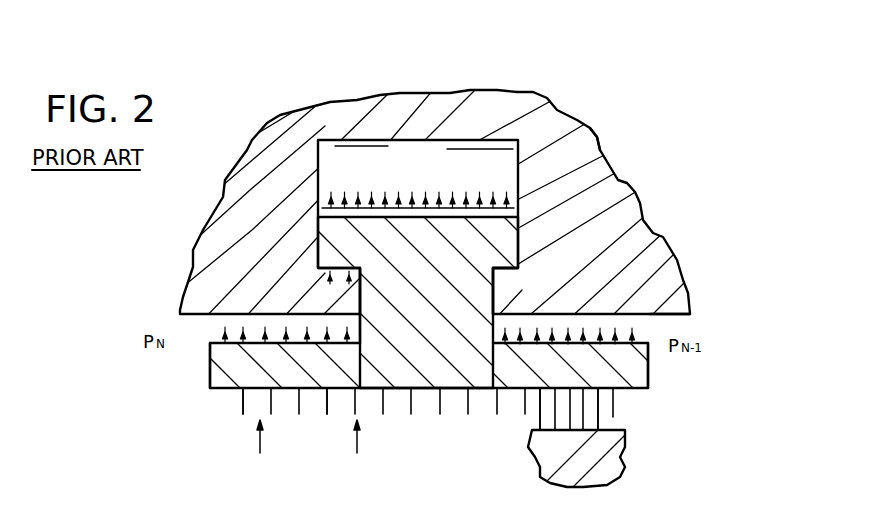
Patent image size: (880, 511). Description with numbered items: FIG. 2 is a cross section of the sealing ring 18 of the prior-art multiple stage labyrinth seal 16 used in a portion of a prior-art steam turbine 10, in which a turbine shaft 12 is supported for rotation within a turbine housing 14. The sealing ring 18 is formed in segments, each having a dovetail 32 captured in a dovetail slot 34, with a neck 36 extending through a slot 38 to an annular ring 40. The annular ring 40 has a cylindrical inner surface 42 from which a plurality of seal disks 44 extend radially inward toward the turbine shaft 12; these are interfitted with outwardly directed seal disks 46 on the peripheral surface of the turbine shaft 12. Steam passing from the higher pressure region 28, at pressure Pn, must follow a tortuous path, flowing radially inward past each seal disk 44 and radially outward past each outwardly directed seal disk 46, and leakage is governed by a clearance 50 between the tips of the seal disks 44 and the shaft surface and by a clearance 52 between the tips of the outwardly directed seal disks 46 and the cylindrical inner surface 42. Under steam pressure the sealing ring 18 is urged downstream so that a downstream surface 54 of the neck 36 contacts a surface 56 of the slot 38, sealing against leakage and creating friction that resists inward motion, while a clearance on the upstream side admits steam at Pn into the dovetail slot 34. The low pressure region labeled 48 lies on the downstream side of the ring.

The portion of a prior-art steam turbine 10 is at (651, 153).
The turbine shaft 12 is at (627, 465).
The turbine housing 14 is at (633, 226).
The multiple stage labyrinth seal 16 is at (672, 397).
The sealing ring 18 is at (435, 395).
The higher pressure region 28 is at (185, 370).
The dovetail 32 is at (594, 140).
The dovetail slot 34 is at (380, 148).
The neck 36 is at (493, 326).
The slot 38 is at (362, 309).
The annular ring 40 is at (648, 371).
The cylindrical inner surface 42 is at (323, 392).
The seal disks 44 is at (243, 402).
The outwardly directed seal disks 46 is at (540, 417).
The low pressure region 48 is at (687, 327).
The clearance 50 is at (641, 424).
The clearance 52 is at (603, 395).
The downstream surface 54 is at (493, 288).
The surface 56 is at (498, 289).